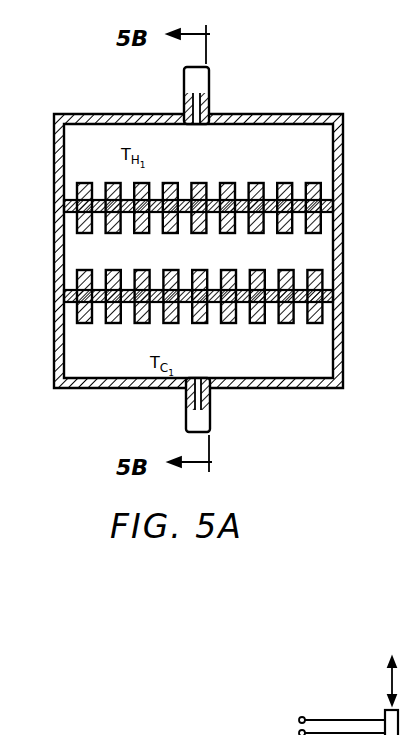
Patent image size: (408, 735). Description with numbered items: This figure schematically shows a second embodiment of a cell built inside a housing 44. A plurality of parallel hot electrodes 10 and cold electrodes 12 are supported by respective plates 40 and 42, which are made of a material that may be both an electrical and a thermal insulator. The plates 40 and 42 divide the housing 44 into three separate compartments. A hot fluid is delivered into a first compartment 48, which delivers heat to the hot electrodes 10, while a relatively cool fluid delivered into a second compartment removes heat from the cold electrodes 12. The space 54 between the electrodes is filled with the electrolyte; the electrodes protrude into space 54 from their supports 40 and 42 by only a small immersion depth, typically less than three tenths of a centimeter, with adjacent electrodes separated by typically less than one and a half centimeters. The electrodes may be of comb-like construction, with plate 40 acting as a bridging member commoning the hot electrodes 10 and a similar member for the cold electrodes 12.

The housing 44 is at (343, 175).
The plate 40 is at (331, 213).
The plate 42 is at (331, 302).
The hot electrodes 10 is at (282, 158).
The cold electrodes 12 is at (232, 323).
The first compartment 48 is at (208, 166).
The space between the electrodes 54 is at (217, 263).